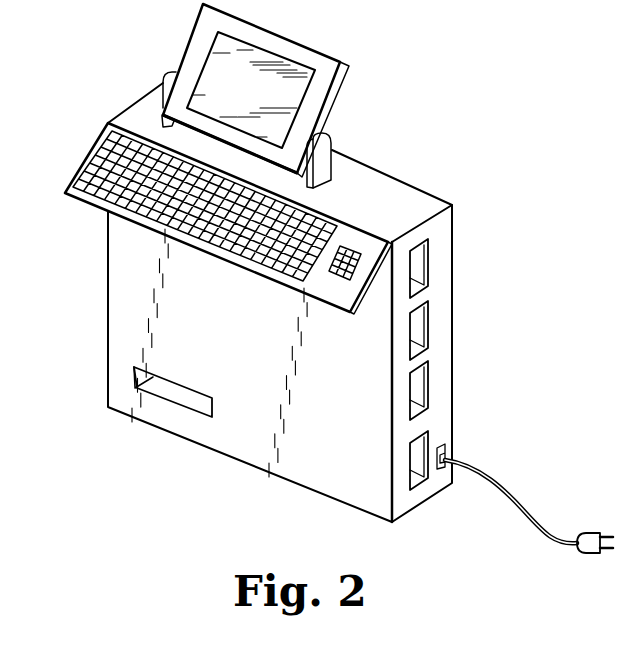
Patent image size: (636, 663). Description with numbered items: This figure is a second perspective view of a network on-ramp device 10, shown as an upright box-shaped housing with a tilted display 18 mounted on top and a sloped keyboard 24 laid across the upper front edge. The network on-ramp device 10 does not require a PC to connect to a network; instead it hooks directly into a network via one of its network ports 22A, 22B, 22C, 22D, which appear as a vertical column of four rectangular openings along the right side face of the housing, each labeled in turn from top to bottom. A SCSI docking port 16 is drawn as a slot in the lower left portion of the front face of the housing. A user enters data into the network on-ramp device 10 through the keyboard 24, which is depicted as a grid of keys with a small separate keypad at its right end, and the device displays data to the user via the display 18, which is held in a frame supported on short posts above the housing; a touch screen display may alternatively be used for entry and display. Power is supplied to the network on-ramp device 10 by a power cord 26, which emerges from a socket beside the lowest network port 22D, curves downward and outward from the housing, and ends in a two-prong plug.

The network on-ramp device 10 is at (441, 112).
The SCSI docking port 16 is at (180, 394).
The display 18 is at (321, 63).
The network port 22A is at (420, 267).
The network port 22B is at (420, 326).
The network port 22C is at (416, 390).
The network port 22D is at (429, 448).
The keyboard 24 is at (83, 166).
The power cord 26 is at (587, 554).